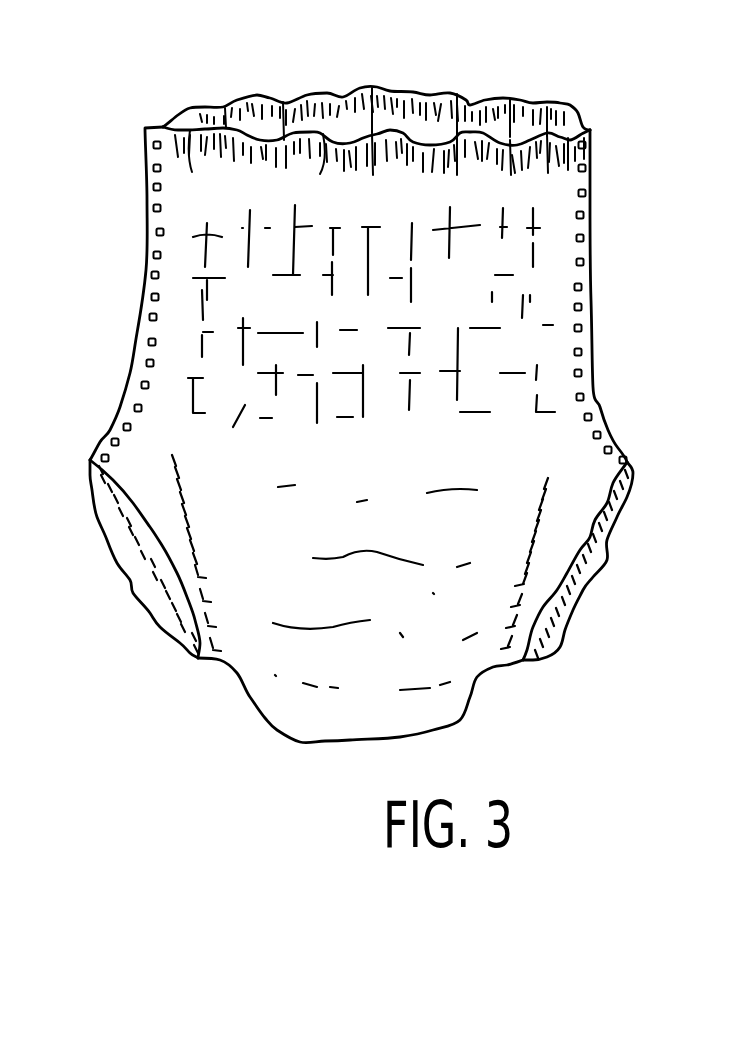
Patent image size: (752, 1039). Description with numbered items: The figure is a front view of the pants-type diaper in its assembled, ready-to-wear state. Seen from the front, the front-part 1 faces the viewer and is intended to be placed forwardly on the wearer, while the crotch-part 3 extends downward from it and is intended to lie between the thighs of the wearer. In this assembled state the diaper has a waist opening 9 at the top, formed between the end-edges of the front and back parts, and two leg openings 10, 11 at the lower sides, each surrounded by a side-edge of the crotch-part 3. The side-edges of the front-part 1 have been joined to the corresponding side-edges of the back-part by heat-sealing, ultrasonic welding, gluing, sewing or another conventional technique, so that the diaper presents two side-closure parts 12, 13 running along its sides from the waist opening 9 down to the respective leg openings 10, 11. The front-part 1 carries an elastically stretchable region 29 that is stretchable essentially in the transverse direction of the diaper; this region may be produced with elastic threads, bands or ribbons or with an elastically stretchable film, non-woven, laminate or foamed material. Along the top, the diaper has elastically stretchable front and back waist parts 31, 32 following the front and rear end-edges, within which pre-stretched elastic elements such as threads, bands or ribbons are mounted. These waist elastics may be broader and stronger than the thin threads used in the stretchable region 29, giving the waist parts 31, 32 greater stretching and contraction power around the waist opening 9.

The front-part 1 is at (227, 338).
The crotch-part 3 is at (347, 687).
The waist opening 9 is at (383, 115).
The leg opening 10 is at (125, 568).
The leg opening 11 is at (607, 573).
The side-closure part 12 is at (157, 265).
The side-closure part 13 is at (590, 298).
The elastically stretchable region 29 is at (495, 250).
The front waist part 31 is at (190, 128).
The back waist part 32 is at (253, 97).